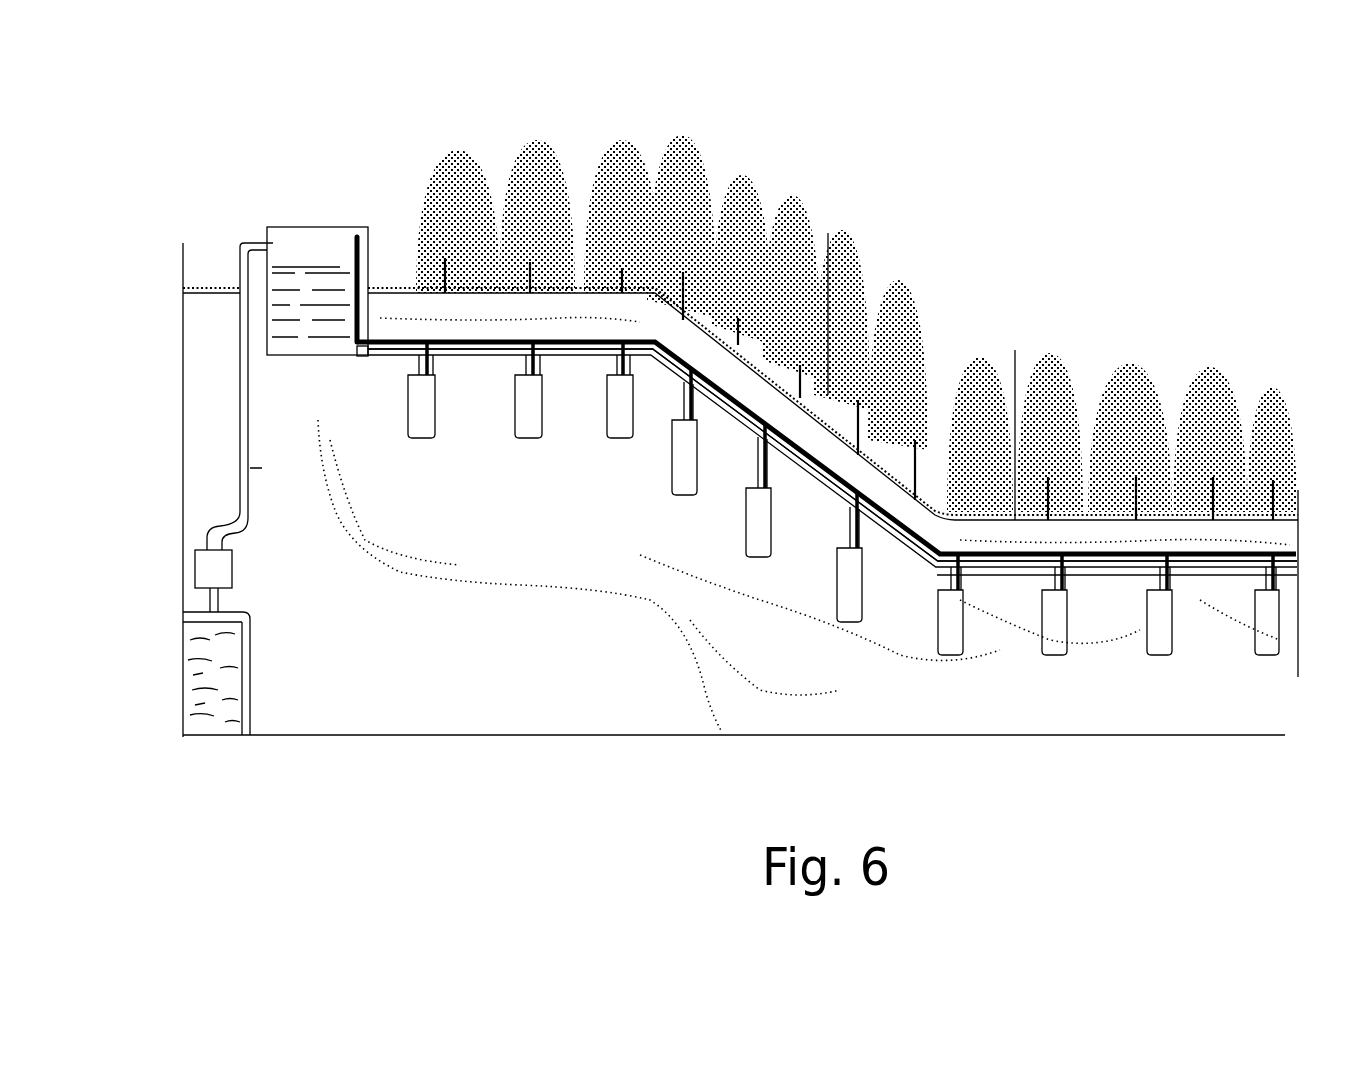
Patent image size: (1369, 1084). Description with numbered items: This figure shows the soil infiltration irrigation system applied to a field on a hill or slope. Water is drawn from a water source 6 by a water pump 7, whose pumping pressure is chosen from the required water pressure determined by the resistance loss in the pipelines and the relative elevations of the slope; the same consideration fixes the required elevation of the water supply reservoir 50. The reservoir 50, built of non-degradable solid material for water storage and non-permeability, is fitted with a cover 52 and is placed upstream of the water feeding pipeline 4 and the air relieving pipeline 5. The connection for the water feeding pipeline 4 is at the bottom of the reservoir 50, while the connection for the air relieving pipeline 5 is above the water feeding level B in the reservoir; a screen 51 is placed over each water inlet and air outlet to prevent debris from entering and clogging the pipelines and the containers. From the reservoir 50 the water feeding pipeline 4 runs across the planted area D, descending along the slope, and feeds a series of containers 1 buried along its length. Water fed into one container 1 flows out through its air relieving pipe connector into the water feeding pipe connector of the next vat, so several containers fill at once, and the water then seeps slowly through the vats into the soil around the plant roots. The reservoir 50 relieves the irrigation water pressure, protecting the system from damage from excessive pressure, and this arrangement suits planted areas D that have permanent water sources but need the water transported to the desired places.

The container 1 is at (683, 483).
The water feeding pipeline 4 is at (392, 355).
The air relieving pipeline 5 is at (433, 362).
The water source 6 is at (192, 684).
The water pump 7 is at (208, 566).
The water supply reservoir 50 is at (330, 250).
The screen 51 is at (362, 356).
The cover 52 is at (277, 227).
The water feeding level B is at (305, 262).
The planted area D is at (929, 274).